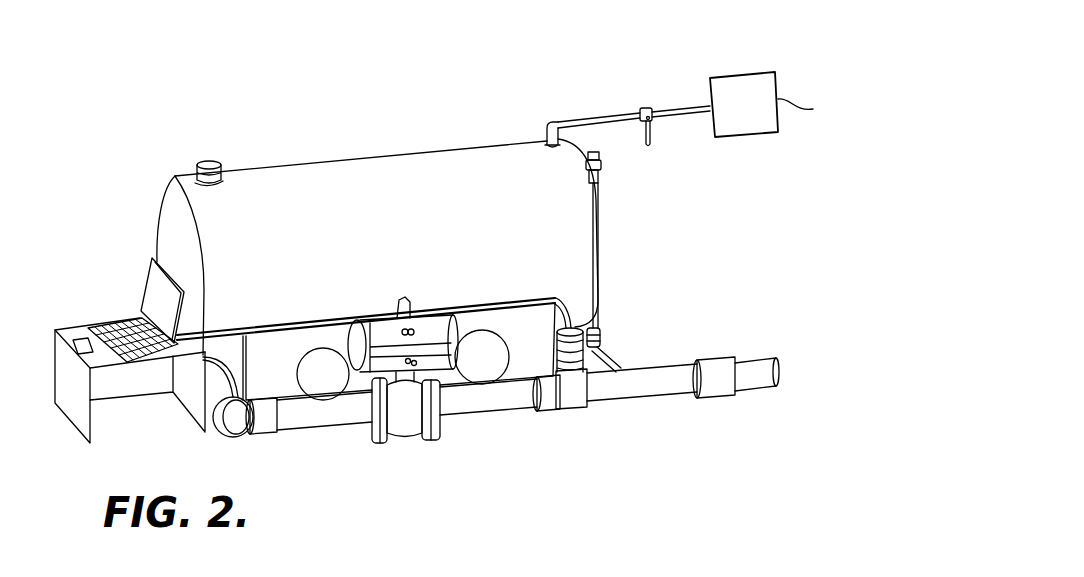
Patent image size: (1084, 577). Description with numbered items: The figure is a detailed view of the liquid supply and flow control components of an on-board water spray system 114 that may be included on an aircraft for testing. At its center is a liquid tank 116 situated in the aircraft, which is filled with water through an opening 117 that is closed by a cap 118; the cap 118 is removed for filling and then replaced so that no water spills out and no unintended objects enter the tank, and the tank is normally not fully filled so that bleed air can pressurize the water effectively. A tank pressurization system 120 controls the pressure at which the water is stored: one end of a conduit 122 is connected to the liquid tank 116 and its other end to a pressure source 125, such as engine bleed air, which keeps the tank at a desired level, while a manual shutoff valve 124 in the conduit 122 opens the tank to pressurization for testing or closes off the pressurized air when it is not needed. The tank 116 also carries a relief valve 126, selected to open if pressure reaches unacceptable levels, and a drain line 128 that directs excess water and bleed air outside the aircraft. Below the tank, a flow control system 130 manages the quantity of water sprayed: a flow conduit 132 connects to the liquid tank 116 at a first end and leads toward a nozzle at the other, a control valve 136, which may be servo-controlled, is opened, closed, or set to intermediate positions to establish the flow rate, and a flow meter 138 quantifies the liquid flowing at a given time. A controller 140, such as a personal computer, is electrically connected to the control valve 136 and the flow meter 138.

The on-board water spray system 114 is at (375, 128).
The liquid tank 116 is at (401, 224).
The opening 117 is at (223, 176).
The cap 118 is at (207, 161).
The tank pressurization system 120 is at (719, 63).
The conduit 122 is at (597, 117).
The manual shutoff valve 124 is at (647, 108).
The pressure source 125 is at (812, 99).
The relief valve 126 is at (600, 175).
The drain line 128 is at (593, 312).
The flow control system 130 is at (383, 463).
The flow conduit 132 is at (313, 422).
The control valve 136 is at (395, 313).
The flow meter 138 is at (587, 367).
The controller 140 is at (105, 320).